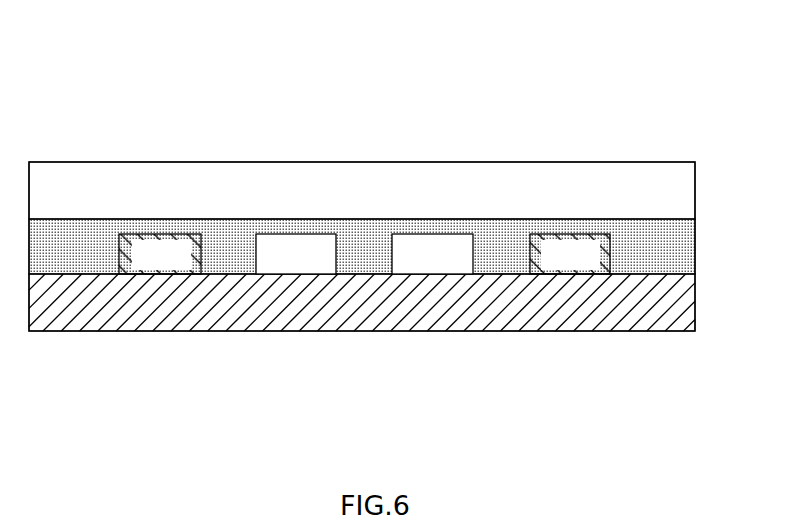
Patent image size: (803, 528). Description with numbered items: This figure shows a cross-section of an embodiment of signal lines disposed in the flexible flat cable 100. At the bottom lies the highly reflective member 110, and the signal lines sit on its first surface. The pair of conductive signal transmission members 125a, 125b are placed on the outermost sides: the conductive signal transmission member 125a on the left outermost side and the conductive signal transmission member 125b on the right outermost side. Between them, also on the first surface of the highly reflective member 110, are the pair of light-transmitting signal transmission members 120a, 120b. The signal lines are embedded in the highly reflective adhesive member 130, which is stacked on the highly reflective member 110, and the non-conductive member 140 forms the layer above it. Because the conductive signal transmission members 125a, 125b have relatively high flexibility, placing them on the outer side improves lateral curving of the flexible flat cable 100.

The flexible flat cable 100 is at (364, 102).
The highly reflective member 110 is at (685, 300).
The light-transmitting signal transmission member 120a is at (321, 267).
The light-transmitting signal transmission member 120b is at (458, 267).
The conductive signal transmission member 125a is at (187, 267).
The conductive signal transmission member 125b is at (596, 267).
The highly reflective adhesive member 130 is at (685, 246).
The non-conductive member 140 is at (685, 186).